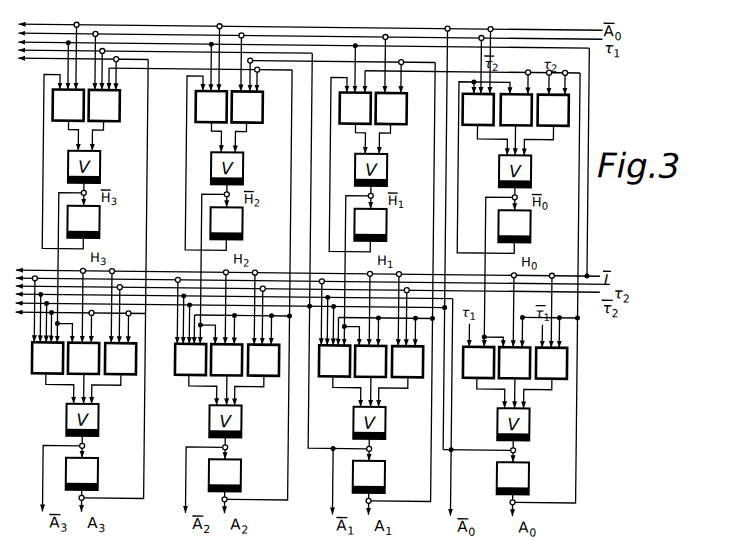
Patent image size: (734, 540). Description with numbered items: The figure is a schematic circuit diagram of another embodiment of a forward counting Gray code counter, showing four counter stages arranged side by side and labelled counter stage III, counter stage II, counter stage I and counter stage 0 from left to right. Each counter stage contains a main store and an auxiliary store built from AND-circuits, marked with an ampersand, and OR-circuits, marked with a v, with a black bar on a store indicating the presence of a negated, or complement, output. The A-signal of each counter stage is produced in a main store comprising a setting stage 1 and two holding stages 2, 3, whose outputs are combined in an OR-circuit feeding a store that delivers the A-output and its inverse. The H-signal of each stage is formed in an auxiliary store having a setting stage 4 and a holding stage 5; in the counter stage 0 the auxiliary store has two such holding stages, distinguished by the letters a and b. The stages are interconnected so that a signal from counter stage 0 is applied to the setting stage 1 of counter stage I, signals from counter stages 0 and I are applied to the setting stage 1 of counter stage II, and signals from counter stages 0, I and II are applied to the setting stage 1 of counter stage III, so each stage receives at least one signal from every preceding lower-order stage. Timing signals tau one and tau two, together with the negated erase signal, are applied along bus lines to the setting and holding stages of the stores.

The setting stage 1 is at (263, 360).
The holding stage 2 is at (299, 361).
The holding stage 3 is at (336, 361).
The setting stage 4 is at (329, 108).
The holding stage 5 is at (292, 107).
The counter stage 0 is at (551, 296).
The counter stage I is at (402, 296).
The counter stage II is at (255, 295).
The counter stage III is at (112, 293).